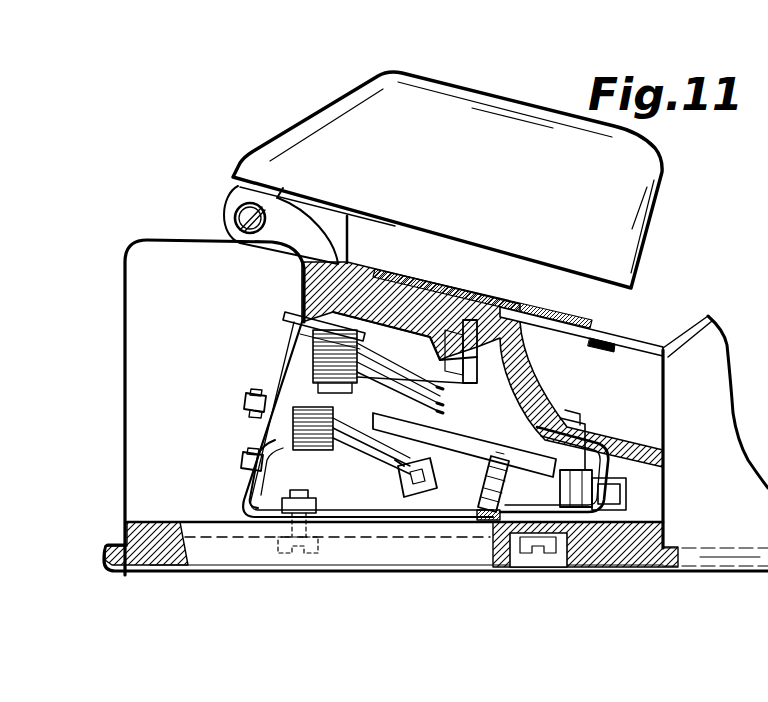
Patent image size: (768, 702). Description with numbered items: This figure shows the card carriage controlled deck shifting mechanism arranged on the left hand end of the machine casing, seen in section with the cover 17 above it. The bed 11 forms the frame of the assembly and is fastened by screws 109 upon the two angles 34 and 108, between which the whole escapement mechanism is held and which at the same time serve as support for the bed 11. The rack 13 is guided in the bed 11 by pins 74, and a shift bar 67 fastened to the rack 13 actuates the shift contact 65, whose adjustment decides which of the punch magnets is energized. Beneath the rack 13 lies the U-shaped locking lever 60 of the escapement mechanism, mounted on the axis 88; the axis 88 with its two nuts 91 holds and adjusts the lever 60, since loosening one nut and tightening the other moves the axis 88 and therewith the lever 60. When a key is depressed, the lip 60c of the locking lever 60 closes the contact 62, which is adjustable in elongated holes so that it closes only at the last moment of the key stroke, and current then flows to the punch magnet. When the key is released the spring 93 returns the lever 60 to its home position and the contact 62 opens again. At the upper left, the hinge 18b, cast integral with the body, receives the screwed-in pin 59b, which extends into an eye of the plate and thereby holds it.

The bed 11 is at (304, 286).
The rack 13 is at (585, 331).
The cover 17 is at (641, 168).
The hinge 18b is at (235, 203).
The pin 59b is at (233, 213).
The angle 34 is at (284, 362).
The locking lever 60 is at (455, 470).
The lip 60c is at (408, 487).
The contact 62 is at (397, 460).
The shift contact 65 is at (426, 387).
The shift bar 67 is at (472, 320).
The pin 74 is at (500, 324).
The axis 88 is at (243, 400).
The nut 91 is at (243, 413).
The spring 93 is at (488, 512).
The angle 108 is at (556, 469).
The screw 109 is at (626, 414).